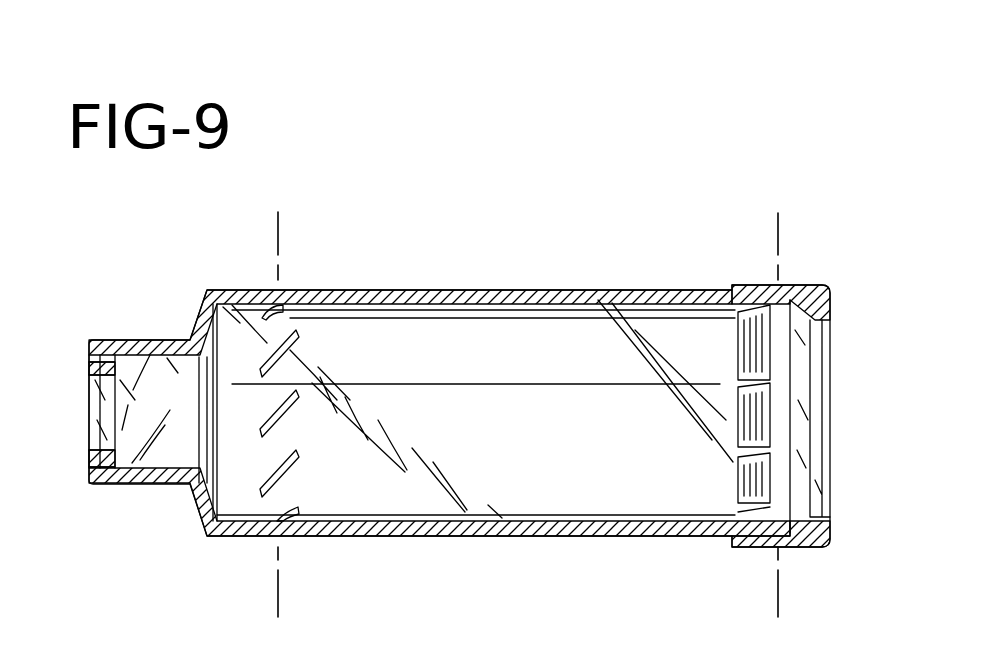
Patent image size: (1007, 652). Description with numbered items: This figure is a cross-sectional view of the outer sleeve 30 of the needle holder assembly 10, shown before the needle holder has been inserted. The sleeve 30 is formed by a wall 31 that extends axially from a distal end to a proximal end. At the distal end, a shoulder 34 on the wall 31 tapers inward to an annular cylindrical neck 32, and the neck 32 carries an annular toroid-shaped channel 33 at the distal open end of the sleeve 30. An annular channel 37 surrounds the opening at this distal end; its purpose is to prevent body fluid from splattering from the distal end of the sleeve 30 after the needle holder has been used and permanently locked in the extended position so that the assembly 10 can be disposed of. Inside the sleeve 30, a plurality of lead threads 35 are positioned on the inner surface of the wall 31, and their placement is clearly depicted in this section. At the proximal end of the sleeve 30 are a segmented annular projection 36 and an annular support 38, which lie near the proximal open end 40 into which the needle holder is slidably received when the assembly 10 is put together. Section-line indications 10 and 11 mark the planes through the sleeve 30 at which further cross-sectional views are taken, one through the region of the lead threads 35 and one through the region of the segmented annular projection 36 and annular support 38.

The outer sleeve 30 is at (497, 260).
The wall 31 is at (400, 537).
The annular cylindrical neck 32 is at (152, 475).
The annular toroid-shaped channel 33 is at (103, 450).
The shoulder 34 is at (203, 317).
The lead threads 35 is at (297, 393).
The segmented annular projection 36 is at (760, 315).
The annular channel 37 is at (108, 357).
The annular support 38 is at (815, 297).
The proximal open end 40 is at (805, 420).
The needle holder assembly 10 is at (284, 607).
The section line 11- 11 is at (785, 607).